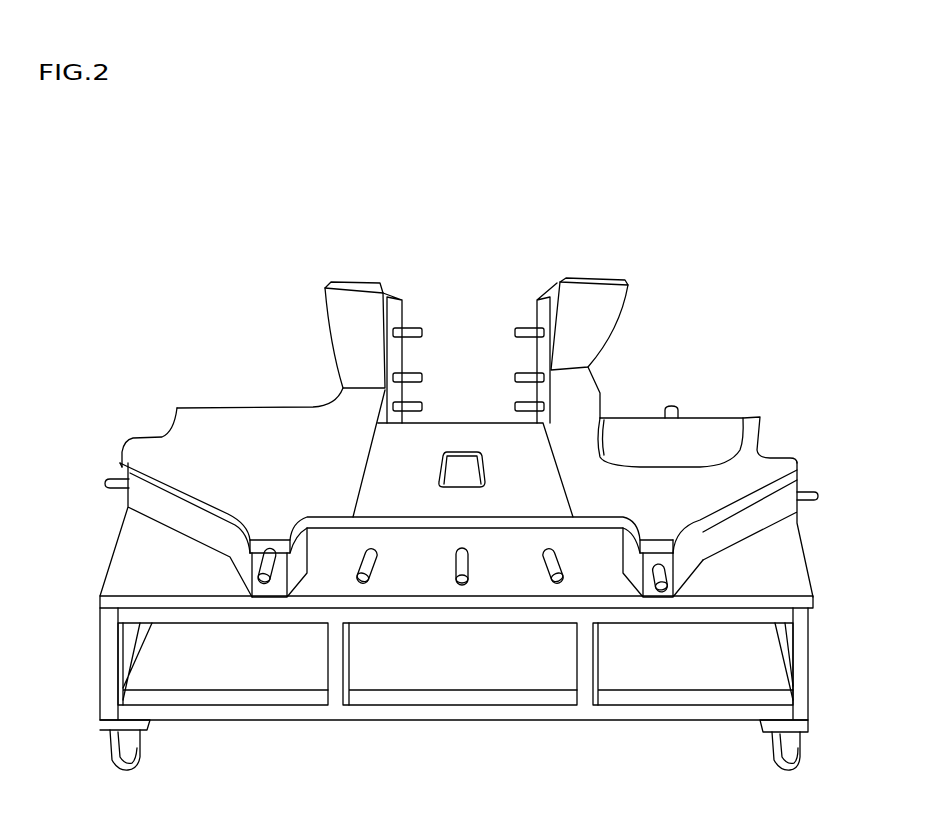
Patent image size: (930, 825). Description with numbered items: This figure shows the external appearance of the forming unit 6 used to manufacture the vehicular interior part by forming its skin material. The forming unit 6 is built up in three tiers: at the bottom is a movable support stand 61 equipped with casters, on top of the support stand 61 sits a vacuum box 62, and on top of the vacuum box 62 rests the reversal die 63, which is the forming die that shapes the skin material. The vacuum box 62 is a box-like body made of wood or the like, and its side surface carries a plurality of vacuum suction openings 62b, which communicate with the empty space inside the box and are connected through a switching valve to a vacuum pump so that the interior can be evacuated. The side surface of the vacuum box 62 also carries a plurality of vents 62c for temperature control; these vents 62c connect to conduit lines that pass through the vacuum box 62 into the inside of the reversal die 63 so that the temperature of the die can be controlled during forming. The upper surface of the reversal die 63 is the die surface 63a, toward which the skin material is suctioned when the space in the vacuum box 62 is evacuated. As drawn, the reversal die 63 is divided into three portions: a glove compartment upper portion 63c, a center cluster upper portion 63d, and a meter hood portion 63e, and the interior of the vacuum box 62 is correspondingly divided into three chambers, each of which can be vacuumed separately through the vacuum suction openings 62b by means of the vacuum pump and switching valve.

The forming unit 6 is at (220, 195).
The support stand 61 is at (787, 568).
The vacuum box 62 is at (763, 519).
The vacuum suction openings 62b is at (265, 588).
The vents 62c is at (113, 478).
The reversal die 63 is at (772, 460).
The die surface 63a is at (227, 472).
The glove compartment upper portion 63c is at (215, 422).
The center cluster upper portion 63d is at (457, 437).
The meter hood portion 63e is at (717, 427).